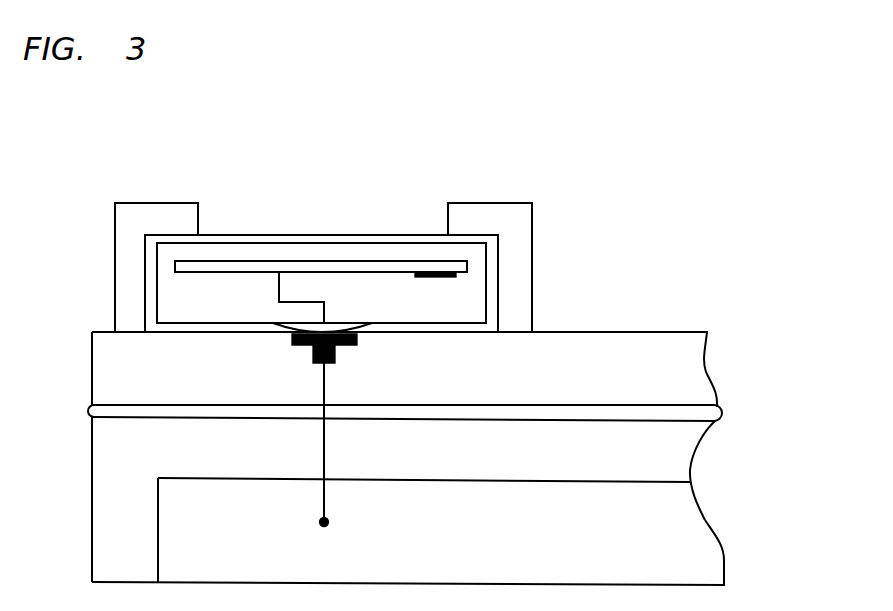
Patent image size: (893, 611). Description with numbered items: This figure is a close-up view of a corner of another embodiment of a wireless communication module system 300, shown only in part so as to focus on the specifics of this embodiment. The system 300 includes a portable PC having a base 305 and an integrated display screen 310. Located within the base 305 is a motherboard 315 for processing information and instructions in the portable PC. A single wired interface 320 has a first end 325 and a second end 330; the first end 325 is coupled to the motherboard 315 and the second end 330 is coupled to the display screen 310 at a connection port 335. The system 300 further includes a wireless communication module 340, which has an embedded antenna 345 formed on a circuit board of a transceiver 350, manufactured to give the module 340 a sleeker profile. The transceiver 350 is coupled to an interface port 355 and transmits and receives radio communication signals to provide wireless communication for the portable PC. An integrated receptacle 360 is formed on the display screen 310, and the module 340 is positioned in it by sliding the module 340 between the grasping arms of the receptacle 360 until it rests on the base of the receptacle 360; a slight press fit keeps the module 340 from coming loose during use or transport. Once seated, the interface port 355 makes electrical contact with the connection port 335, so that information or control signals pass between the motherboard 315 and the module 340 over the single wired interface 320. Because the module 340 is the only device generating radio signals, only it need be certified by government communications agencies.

The wireless communication module system 300 is at (643, 182).
The base 305 is at (106, 438).
The integrated display screen 310 is at (106, 368).
The motherboard 315 is at (158, 478).
The single wired interface 320 is at (328, 451).
The first end 325 is at (330, 522).
The second end 330 is at (328, 385).
The connection port 335 is at (292, 338).
The wireless communication module 340 is at (290, 234).
The embedded antenna 345 is at (427, 272).
The transceiver 350 is at (352, 260).
The interface port 355 is at (353, 323).
The integrated receptacle 360 is at (142, 200).